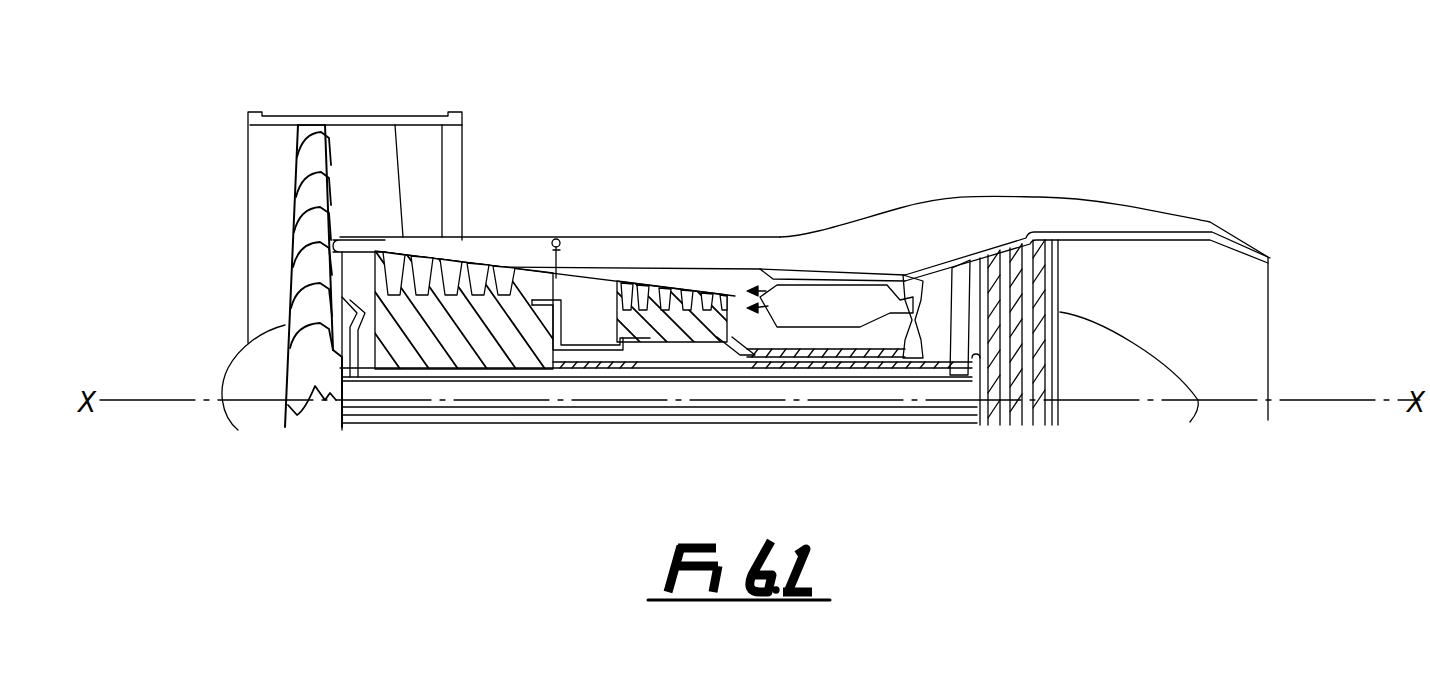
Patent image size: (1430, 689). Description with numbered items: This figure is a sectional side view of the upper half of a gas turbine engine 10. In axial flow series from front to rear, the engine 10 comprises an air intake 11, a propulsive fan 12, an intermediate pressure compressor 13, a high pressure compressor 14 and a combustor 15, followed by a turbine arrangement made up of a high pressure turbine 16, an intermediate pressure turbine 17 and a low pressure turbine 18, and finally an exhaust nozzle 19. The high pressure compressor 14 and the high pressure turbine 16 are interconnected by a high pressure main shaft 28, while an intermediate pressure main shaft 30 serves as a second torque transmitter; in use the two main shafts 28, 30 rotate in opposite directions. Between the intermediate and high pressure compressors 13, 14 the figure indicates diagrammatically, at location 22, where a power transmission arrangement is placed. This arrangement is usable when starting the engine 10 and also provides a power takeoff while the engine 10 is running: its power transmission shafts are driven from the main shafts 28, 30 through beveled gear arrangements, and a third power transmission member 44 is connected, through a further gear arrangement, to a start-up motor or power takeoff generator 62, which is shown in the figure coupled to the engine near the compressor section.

The gas turbine engine 10 is at (671, 140).
The air intake 11 is at (210, 238).
The propulsive fan 12 is at (318, 157).
The intermediate pressure compressor 13 is at (478, 312).
The high pressure compressor 14 is at (671, 318).
The combustor 15 is at (832, 258).
The high pressure turbine 16 is at (909, 282).
The intermediate pressure turbine 17 is at (961, 297).
The low pressure turbine 18 is at (1017, 278).
The exhaust nozzle 19 is at (1257, 347).
The location of the power transmission arrangement 22 is at (586, 328).
The high pressure main shaft 28 is at (690, 330).
The intermediate pressure main shaft 30 is at (647, 337).
The third power transmission member 44 is at (542, 248).
The start-up motor or power takeoff generator 62 is at (557, 240).